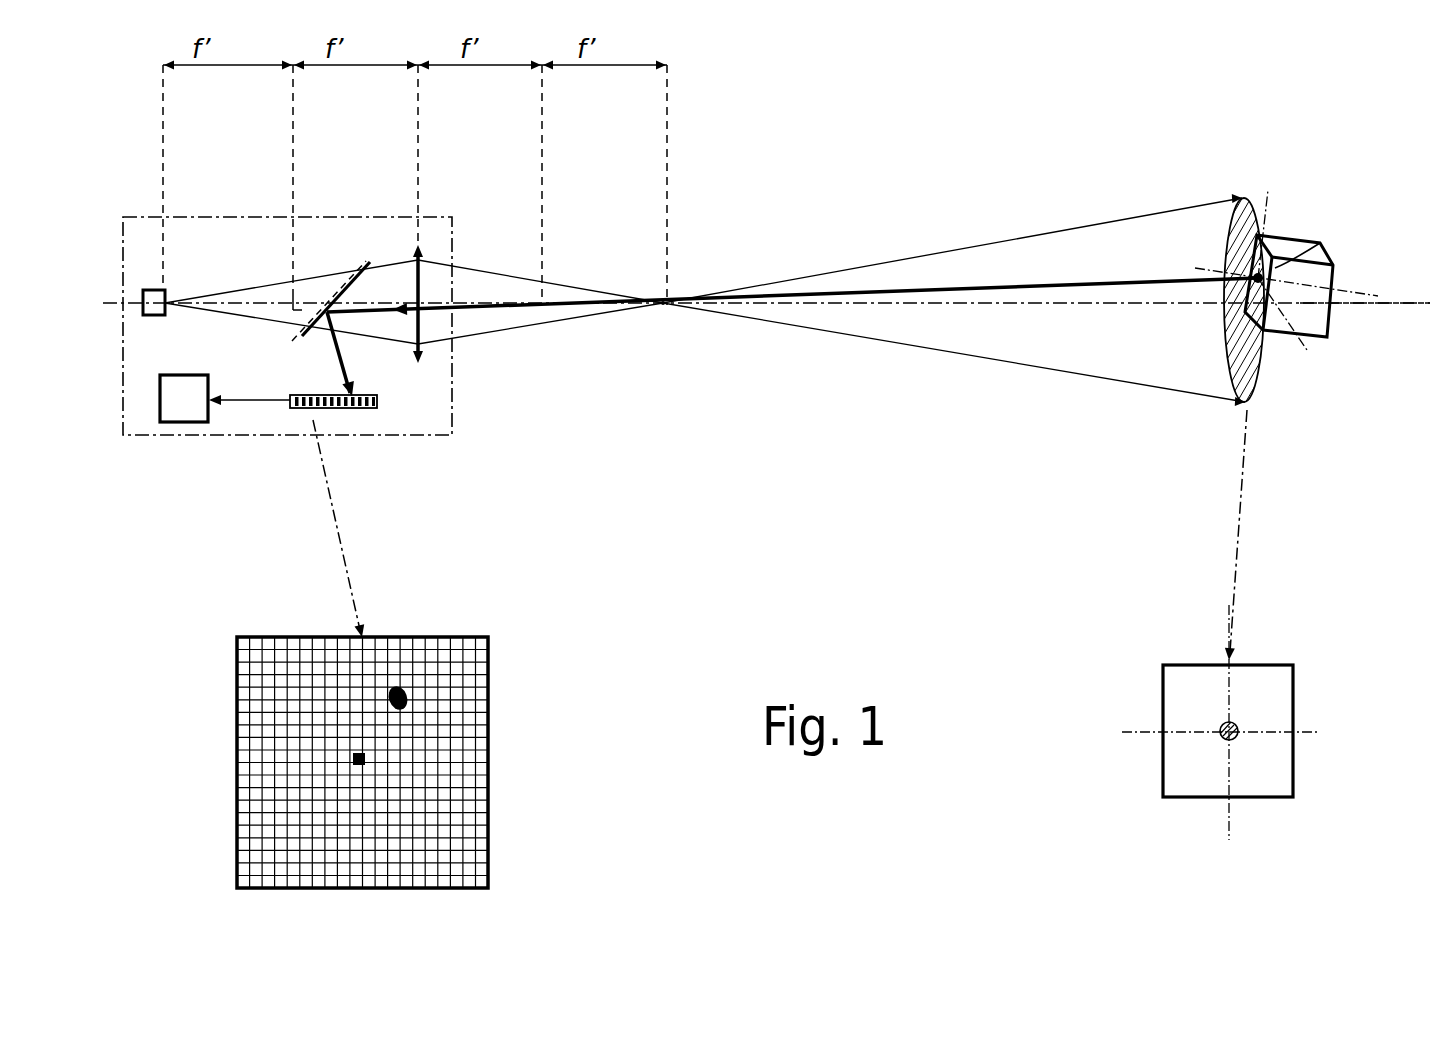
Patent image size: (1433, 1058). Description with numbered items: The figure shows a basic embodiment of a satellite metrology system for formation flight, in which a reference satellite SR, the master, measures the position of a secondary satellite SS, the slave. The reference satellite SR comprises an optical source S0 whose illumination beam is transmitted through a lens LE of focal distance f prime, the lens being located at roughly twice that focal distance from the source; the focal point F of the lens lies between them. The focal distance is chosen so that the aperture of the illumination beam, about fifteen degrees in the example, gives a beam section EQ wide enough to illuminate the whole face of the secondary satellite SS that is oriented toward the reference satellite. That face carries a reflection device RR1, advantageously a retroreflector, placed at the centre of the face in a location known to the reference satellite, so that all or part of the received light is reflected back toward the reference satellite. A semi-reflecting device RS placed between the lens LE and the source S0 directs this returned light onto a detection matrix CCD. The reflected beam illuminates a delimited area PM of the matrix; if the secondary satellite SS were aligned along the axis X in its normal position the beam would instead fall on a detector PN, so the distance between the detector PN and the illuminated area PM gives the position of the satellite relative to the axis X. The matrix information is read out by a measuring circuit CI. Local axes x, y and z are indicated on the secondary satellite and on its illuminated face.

The optical source S0 is at (153, 289).
The reference satellite SR is at (291, 216).
The semi-reflecting device RS is at (366, 258).
The lens LE is at (422, 248).
The focal point of lens F is at (285, 316).
The measuring circuit CI is at (155, 397).
The detection matrix CCD is at (332, 410).
The section of the illumination beam EQ is at (1243, 198).
The reflection device RR1 is at (1319, 245).
The secondary satellite SS is at (1322, 302).
The illuminated area PM is at (413, 693).
The detector PN is at (365, 758).
The axis X is at (760, 320).
The x axis x is at (1286, 279).
The y axis y is at (1231, 511).
The z axis z is at (1256, 522).